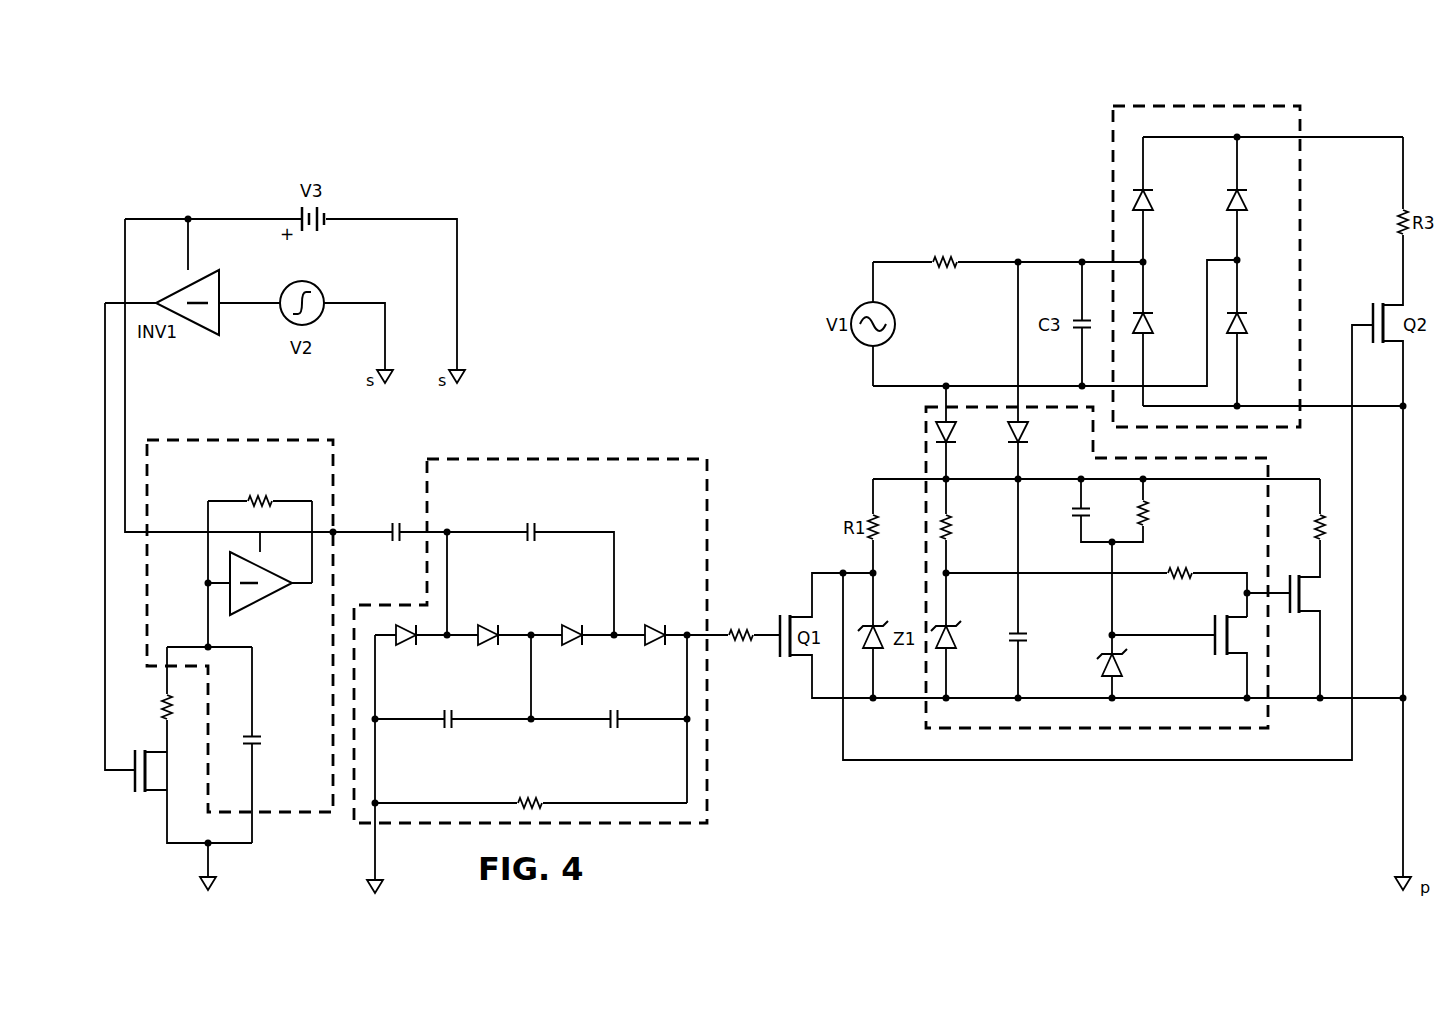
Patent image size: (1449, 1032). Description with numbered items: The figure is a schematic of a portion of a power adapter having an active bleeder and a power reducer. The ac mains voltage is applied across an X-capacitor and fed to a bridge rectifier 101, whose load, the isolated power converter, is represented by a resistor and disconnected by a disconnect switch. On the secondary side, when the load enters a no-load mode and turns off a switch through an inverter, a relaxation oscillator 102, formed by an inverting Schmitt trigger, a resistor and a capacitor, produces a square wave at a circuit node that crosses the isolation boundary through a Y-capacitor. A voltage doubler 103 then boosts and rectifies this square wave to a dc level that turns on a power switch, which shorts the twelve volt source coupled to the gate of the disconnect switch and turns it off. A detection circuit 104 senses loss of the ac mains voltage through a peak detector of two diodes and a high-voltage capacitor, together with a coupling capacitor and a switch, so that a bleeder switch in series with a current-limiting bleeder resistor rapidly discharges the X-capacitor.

The bridge rectifier 101 is at (1243, 103).
The relaxation oscillator 102 is at (208, 440).
The voltage doubler 103 is at (487, 459).
The detection circuit 104 is at (923, 456).